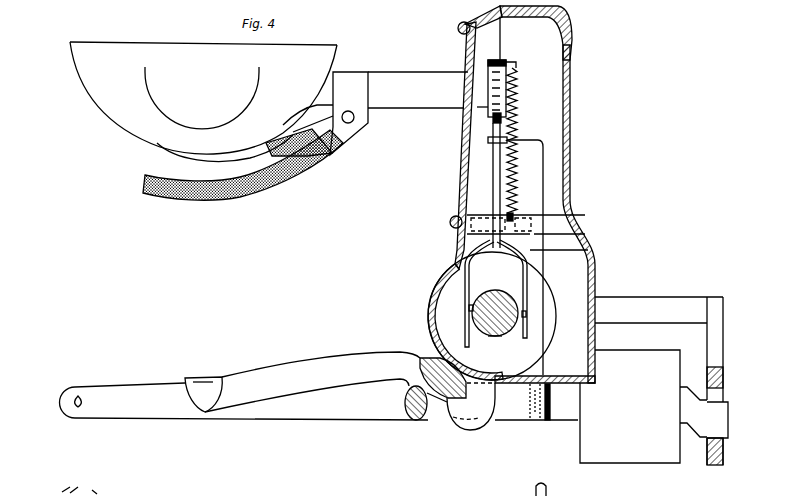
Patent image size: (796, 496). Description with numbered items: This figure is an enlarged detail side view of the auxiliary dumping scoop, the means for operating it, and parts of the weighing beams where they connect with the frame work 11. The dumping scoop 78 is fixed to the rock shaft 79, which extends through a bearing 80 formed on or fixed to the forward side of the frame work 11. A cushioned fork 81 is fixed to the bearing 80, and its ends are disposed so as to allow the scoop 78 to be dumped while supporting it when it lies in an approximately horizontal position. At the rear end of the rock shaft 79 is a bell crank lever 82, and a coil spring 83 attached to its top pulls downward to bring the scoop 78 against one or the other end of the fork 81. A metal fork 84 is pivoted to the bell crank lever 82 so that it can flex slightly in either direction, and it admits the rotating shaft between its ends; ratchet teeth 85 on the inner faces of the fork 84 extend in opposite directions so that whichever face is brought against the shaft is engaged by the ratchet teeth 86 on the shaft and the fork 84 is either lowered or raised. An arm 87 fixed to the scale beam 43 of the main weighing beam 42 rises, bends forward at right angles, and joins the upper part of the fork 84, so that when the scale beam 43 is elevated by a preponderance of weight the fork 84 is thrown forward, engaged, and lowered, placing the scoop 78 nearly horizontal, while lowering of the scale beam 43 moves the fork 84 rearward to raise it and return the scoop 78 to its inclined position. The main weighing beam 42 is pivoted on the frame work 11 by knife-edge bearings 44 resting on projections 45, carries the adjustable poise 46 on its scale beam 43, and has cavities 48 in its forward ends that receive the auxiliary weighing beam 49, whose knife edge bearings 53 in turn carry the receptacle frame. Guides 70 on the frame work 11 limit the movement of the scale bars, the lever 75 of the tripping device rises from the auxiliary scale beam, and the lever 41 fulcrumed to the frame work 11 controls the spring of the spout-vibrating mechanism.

The support and containing frame work 11 is at (568, 126).
The lever 41 is at (432, 362).
The main weighing beam 42 is at (312, 382).
The scale beam 43 is at (704, 412).
The knife-edge bearings 44 is at (407, 403).
The projections 45 is at (471, 406).
The poise 46 is at (630, 406).
The cavities 48 is at (565, 413).
The auxiliary weighing beam 49 is at (243, 401).
The knife edge bearings 53 is at (167, 381).
The guides 70 is at (707, 349).
The lever 75 is at (493, 298).
The dumping scoop 78 is at (203, 102).
The rock shaft 79 is at (320, 96).
The bearing 80 is at (428, 90).
The cushioned fork 81 is at (287, 186).
The bell crank lever 82 is at (508, 90).
The coil spring 83 is at (513, 124).
The metal fork 84 is at (496, 293).
The ratchet teeth 85 is at (470, 308).
The ratchet teeth 86 is at (500, 334).
The arm 87 is at (271, 147).